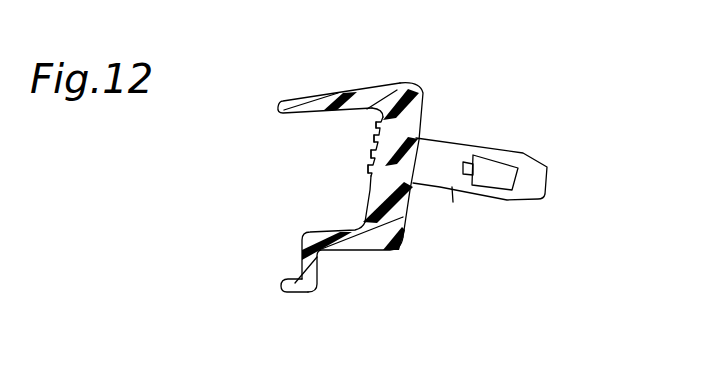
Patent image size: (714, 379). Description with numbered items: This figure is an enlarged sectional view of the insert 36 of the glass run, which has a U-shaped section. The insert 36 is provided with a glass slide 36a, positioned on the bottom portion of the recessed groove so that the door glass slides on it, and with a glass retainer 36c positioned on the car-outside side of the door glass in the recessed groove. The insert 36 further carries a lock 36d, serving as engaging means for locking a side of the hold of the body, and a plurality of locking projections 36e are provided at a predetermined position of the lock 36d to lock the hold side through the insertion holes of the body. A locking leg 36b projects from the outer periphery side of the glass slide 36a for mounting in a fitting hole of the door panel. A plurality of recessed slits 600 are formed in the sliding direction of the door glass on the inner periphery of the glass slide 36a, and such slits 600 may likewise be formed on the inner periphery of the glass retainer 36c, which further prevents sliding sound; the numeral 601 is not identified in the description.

The insert 36 is at (467, 94).
The glass slide 36a is at (407, 112).
The locking leg 36b is at (538, 184).
The glass retainer 36c is at (310, 106).
The lock 36d is at (343, 245).
The locking projection 36e is at (300, 285).
The recessed slit 600 is at (383, 131).
The notches 601 is at (380, 124).